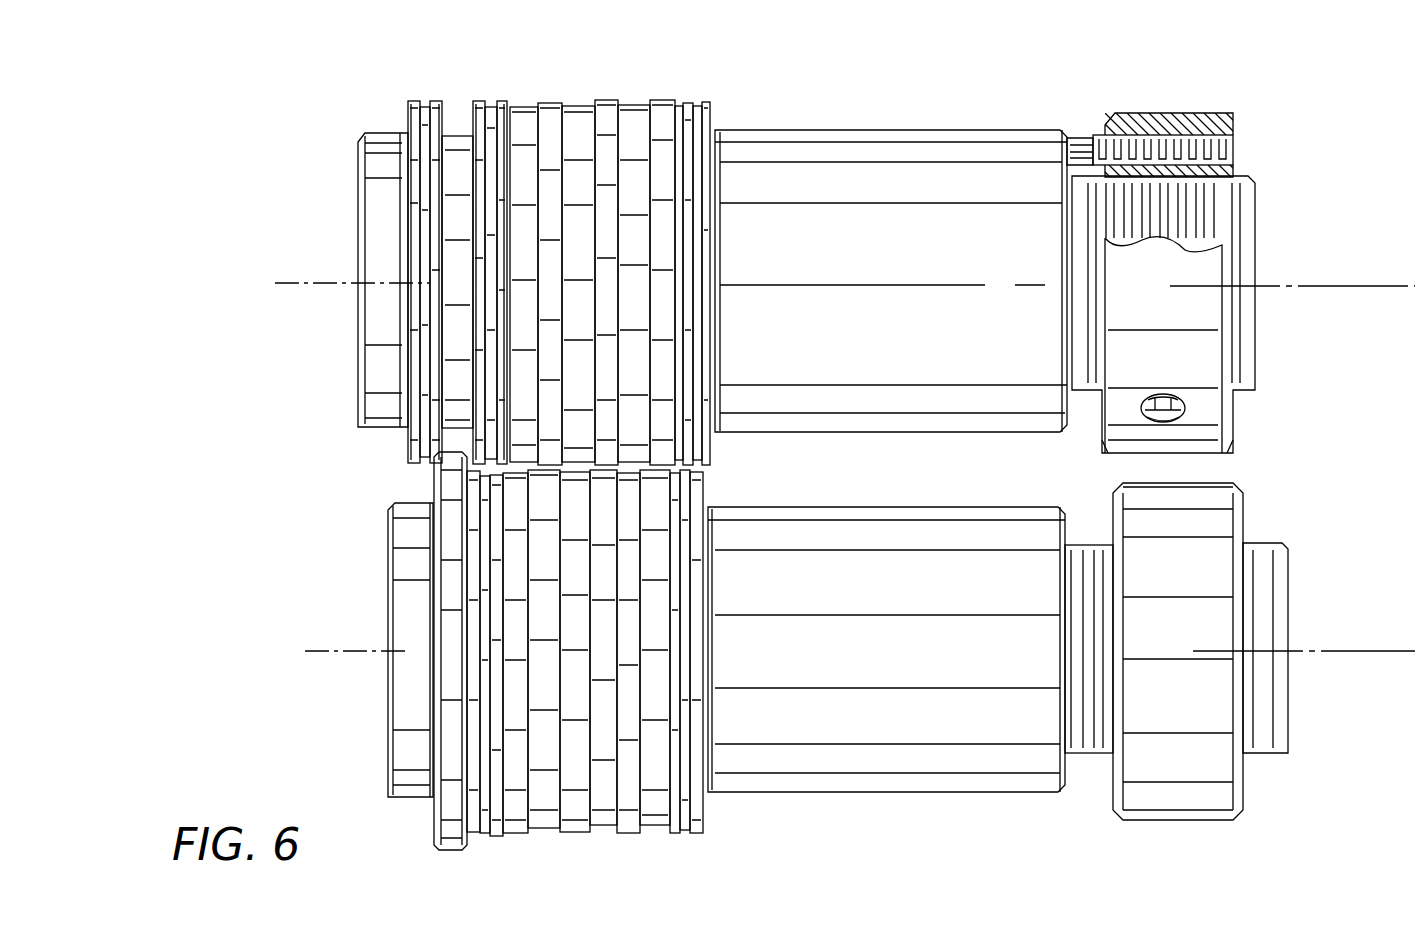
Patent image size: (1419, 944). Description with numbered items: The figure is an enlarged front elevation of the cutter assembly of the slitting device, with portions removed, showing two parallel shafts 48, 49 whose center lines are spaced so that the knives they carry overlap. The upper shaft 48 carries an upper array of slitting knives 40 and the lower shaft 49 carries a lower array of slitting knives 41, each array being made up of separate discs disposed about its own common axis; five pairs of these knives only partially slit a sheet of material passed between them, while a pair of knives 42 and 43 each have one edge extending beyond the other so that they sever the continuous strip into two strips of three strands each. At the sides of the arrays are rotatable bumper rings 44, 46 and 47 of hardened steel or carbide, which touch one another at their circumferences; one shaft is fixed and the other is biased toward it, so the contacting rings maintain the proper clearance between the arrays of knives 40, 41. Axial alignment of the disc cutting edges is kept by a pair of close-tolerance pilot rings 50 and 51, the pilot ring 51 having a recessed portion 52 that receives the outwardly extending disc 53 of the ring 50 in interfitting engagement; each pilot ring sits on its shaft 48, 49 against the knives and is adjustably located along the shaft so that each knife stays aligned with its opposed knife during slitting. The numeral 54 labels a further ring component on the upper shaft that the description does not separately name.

The upper array of slitting knives 40 is at (664, 98).
The lower array of slitting knives 41 is at (630, 820).
The knife 42 is at (604, 100).
The knife 43 is at (577, 830).
The bumper ring 44 is at (708, 100).
The bumper ring 46 is at (700, 832).
The bumper ring 47 is at (497, 836).
The shaft 48 is at (938, 130).
The shaft 49 is at (970, 795).
The pilot ring 50 is at (413, 100).
The pilot ring 51 is at (443, 818).
The recessed portion 52 is at (450, 690).
The outwardly extending disc 53 is at (452, 285).
The disc pair 54 is at (483, 100).